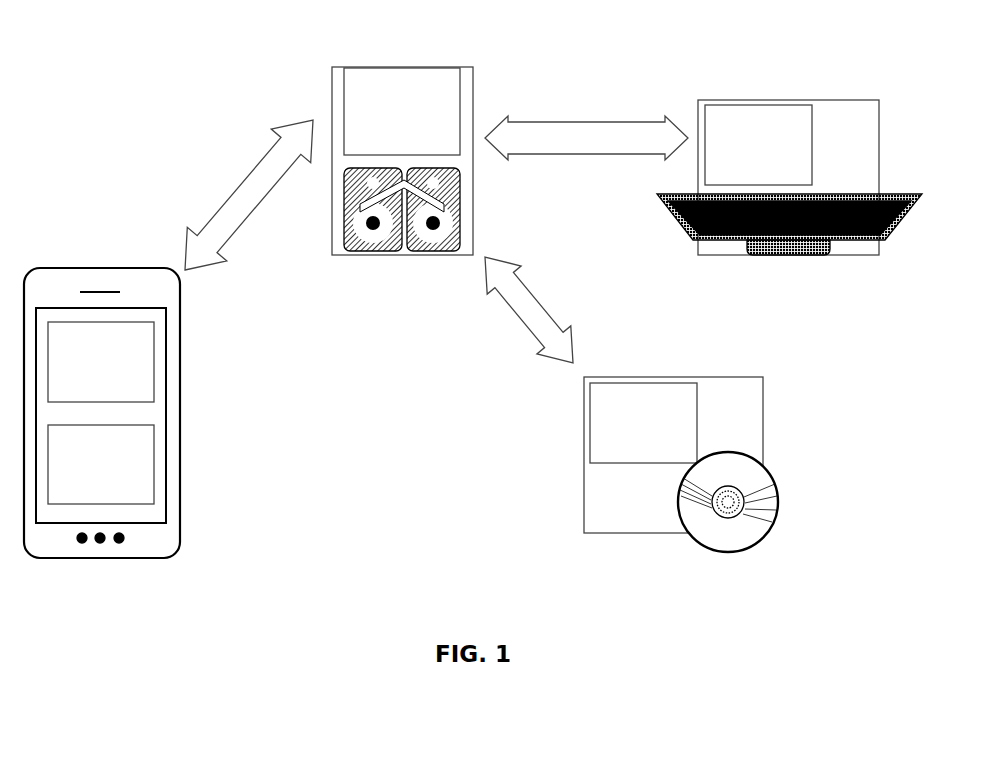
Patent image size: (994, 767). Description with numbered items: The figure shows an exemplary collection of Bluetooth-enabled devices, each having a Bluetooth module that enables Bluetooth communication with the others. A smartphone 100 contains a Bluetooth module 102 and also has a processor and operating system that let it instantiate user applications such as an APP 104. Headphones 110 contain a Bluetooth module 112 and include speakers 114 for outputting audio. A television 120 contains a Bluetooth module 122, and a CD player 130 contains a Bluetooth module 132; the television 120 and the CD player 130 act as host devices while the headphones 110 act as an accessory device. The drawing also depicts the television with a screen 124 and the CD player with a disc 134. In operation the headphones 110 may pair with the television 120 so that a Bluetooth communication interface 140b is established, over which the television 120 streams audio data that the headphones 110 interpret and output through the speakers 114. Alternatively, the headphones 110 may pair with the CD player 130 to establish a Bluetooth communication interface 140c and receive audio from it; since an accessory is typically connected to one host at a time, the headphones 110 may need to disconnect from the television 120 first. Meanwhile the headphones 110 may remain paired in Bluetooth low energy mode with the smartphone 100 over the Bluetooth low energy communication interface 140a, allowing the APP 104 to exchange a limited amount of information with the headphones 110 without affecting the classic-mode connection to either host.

The smartphone 100 is at (147, 388).
The Bluetooth module 102 is at (154, 362).
The APP 104 is at (154, 466).
The headphones 110 is at (408, 150).
The Bluetooth module 112 is at (460, 110).
The speakers 114 is at (460, 218).
The television 120 is at (787, 173).
The Bluetooth module 122 is at (758, 105).
The television screen 124 is at (900, 227).
The CD player 130 is at (658, 461).
The Bluetooth module 132 is at (590, 424).
The disc 134 is at (708, 548).
The Bluetooth low energy communication interface 140a is at (236, 178).
The Bluetooth communication interface 140b is at (640, 122).
The Bluetooth communication interface 140c is at (510, 320).